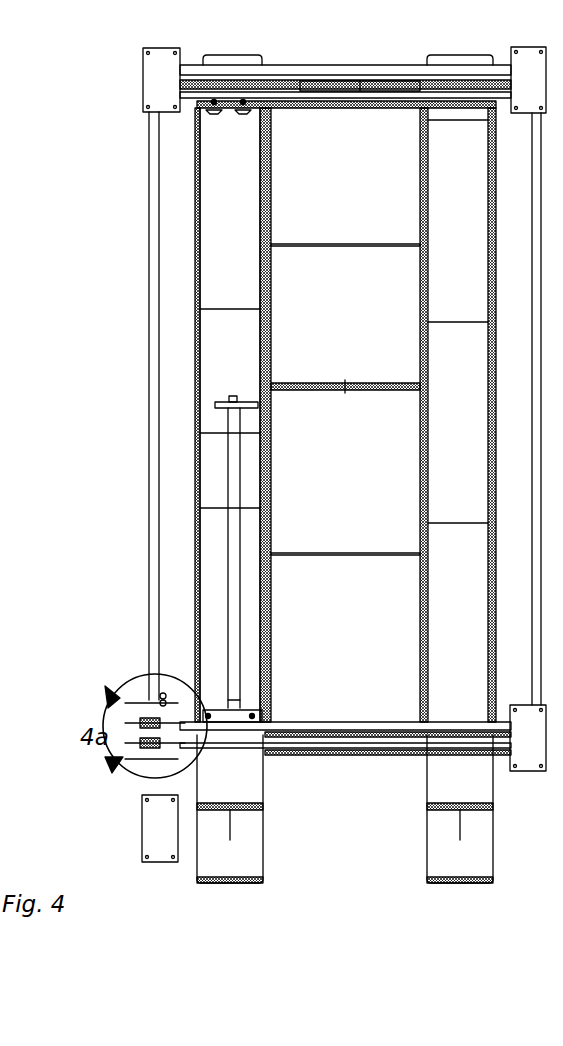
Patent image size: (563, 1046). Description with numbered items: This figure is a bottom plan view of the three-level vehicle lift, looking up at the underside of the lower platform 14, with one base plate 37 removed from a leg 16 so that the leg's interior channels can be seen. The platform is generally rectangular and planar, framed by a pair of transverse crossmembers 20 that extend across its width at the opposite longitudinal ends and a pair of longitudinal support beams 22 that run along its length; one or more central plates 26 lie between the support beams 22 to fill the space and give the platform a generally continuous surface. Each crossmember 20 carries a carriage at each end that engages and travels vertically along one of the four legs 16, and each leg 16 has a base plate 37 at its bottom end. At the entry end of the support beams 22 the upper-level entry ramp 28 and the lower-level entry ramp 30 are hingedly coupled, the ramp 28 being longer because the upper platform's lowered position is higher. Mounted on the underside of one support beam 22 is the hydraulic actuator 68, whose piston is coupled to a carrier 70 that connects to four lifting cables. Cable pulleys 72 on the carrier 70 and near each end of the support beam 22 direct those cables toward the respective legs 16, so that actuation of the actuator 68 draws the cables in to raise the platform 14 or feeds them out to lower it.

The lower platform 14 is at (195, 270).
The leg 16 is at (143, 62).
The transverse crossmember 20 is at (378, 92).
The longitudinal support beam 22 is at (262, 287).
The central plate 26 is at (388, 506).
The upper-level entry ramp 28 is at (428, 870).
The lower-level entry ramp 30 is at (428, 790).
The base plate 37 is at (148, 97).
The hydraulic actuator 68 is at (235, 518).
The carrier 70 is at (240, 404).
The cable pulley 72 is at (212, 112).